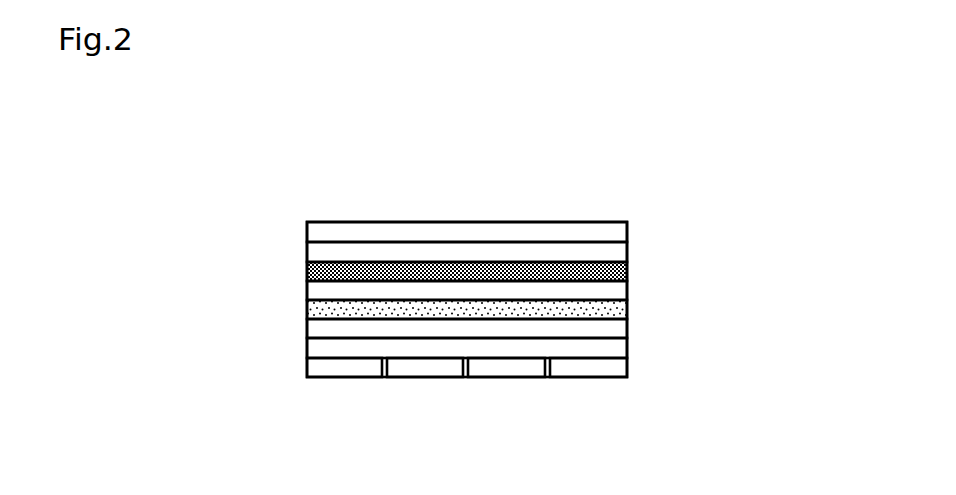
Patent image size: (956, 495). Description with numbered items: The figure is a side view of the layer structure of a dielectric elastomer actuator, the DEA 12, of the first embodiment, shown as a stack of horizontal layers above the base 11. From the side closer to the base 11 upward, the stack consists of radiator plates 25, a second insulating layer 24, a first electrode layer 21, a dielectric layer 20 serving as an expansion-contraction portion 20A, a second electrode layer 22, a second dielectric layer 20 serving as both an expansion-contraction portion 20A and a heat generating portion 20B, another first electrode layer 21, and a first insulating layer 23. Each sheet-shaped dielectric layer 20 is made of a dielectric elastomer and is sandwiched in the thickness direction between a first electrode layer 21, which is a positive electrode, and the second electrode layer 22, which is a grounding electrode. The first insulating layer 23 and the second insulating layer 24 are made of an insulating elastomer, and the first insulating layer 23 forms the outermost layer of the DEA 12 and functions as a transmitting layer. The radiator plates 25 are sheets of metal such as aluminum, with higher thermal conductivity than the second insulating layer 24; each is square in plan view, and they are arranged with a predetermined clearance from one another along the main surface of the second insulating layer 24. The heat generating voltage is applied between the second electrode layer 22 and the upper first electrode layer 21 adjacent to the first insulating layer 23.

The DEA 12 is at (603, 178).
The first insulating layer 23 is at (306, 231).
The first electrode layer 21 is at (306, 259).
The dielectric layer 20 is at (563, 293).
The expansion-contraction portion 20A is at (467, 290).
The heat generating portion 20B is at (627, 270).
The second electrode layer 22 is at (306, 290).
The second insulating layer 24 is at (306, 358).
The radiator plates 25 is at (412, 378).
The base 11 is at (466, 403).